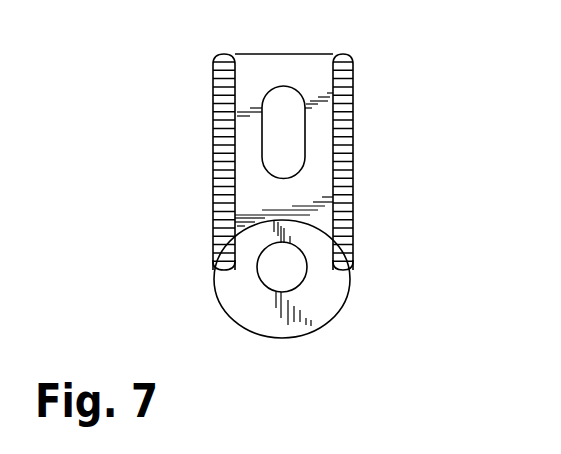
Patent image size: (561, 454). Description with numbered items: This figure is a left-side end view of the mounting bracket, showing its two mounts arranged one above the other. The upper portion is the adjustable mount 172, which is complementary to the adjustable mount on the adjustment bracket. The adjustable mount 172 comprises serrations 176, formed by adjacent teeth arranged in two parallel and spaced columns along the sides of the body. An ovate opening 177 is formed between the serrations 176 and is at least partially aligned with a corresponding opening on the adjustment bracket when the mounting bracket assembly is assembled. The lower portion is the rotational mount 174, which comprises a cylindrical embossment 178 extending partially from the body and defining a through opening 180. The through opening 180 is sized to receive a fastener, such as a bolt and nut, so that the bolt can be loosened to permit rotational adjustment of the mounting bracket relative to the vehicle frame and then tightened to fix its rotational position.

The adjustable mount 172 is at (353, 195).
The rotational mount 174 is at (216, 287).
The serrations 176 is at (212, 68).
The ovate opening 177 is at (276, 128).
The cylindrical embossment 178 is at (327, 323).
The through opening 180 is at (291, 268).